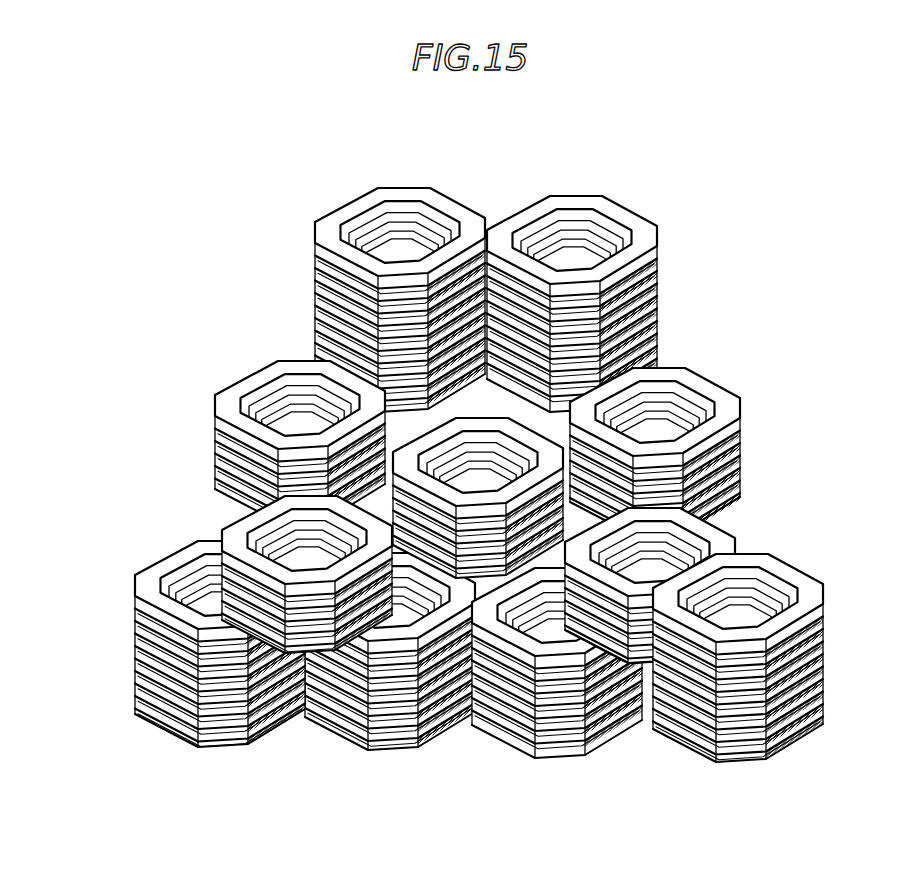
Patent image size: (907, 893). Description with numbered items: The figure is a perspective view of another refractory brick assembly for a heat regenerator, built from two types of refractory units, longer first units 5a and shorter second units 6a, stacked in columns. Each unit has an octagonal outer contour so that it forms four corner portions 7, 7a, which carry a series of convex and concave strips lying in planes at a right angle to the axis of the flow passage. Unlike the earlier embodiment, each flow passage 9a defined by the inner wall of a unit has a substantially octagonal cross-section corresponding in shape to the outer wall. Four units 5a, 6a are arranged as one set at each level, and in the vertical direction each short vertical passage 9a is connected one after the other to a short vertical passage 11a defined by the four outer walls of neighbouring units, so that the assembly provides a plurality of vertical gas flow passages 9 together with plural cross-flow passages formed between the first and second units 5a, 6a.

The vertical gas flow passage 9 is at (540, 216).
The corner portion 7 is at (476, 262).
The flow passage 9a is at (508, 328).
The first unit 5a is at (660, 308).
The short vertical passage 11a is at (463, 393).
The second unit 6a is at (483, 540).
The corner portion 7a is at (640, 730).